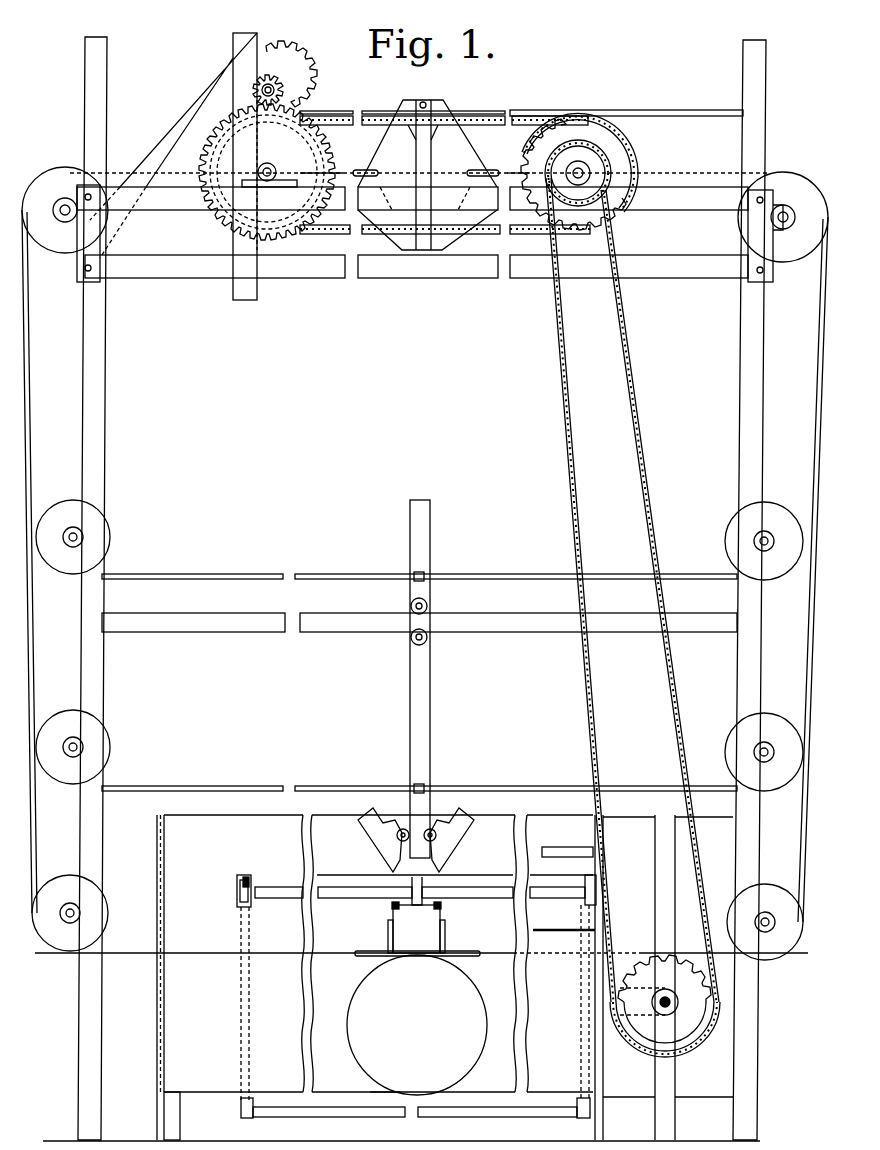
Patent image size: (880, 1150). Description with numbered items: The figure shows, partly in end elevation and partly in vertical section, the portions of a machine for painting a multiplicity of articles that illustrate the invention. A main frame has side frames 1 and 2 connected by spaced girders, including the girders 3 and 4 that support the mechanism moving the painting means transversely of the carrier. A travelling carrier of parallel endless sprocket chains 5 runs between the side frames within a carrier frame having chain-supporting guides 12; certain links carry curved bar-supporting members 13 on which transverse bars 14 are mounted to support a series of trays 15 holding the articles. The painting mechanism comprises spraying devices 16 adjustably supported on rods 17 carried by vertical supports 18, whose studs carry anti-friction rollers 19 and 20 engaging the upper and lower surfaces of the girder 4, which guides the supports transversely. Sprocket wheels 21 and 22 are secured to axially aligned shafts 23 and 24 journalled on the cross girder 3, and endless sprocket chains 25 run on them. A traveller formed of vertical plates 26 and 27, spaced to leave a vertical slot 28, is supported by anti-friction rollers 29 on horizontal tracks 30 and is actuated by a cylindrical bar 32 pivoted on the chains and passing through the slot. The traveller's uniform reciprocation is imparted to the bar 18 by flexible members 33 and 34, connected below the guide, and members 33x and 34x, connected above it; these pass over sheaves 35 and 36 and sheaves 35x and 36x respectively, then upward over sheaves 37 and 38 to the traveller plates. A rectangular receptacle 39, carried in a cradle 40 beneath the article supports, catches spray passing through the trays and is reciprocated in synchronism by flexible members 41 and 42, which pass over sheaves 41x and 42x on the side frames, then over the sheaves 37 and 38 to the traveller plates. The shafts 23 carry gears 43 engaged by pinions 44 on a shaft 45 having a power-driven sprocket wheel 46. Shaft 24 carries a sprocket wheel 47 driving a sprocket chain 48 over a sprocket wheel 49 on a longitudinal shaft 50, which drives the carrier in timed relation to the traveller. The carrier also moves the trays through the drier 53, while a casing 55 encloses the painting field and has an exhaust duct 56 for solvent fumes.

The side frame 1 is at (750, 683).
The side frame 2 is at (85, 683).
The girder 3 is at (712, 212).
The girder 4 is at (698, 603).
The endless sprocket chains 5 is at (243, 875).
The chain-supporting guides 12 is at (237, 892).
The bar-supporting members 13 is at (252, 880).
The transverse bars 14 is at (328, 887).
The trays 15 is at (482, 887).
The spraying devices 16 is at (365, 815).
The rods 17 is at (432, 830).
The vertical supports 18 is at (430, 712).
The anti-friction roller 19 is at (428, 638).
The anti-friction roller 20 is at (428, 606).
The sprocket wheel 21 is at (330, 136).
The sprocket wheel 22 is at (630, 153).
The shaft 23 is at (270, 170).
The shaft 24 is at (585, 170).
The endless sprocket chains 25 is at (498, 113).
The vertical plate 26 is at (465, 135).
The vertical plate 27 is at (386, 145).
The vertical slot 28 is at (420, 164).
The anti-friction rollers 29 is at (428, 102).
The horizontal tracks 30 is at (660, 110).
The cylindrical bar 32 is at (425, 135).
The flexible member 33 is at (545, 786).
The flexible member 33x is at (548, 574).
The flexible member 34 is at (290, 786).
The flexible member 34x is at (300, 563).
The sheave 35 is at (775, 793).
The sheave 35x is at (785, 570).
The sheave 36 is at (66, 783).
The sheave 36x is at (68, 573).
The sheave 37 is at (793, 258).
The sheave 38 is at (68, 250).
The receptacle 39 is at (442, 926).
The cradle 40 is at (410, 957).
The flexible member 41 is at (500, 953).
The sheave 41x is at (780, 955).
The flexible member 42 is at (305, 945).
The sheave 42x is at (60, 952).
The gear 43 is at (222, 225).
The pinion 44 is at (300, 58).
The shaft 45 is at (283, 85).
The sprocket wheel 46 is at (275, 75).
The sprocket wheel 47 is at (612, 232).
The sprocket chain 48 is at (645, 475).
The sprocket wheel 49 is at (706, 1040).
The shaft 50 is at (665, 1000).
The drier 53 is at (575, 850).
The casing 55 is at (380, 1100).
The exhaust duct 56 is at (355, 1050).